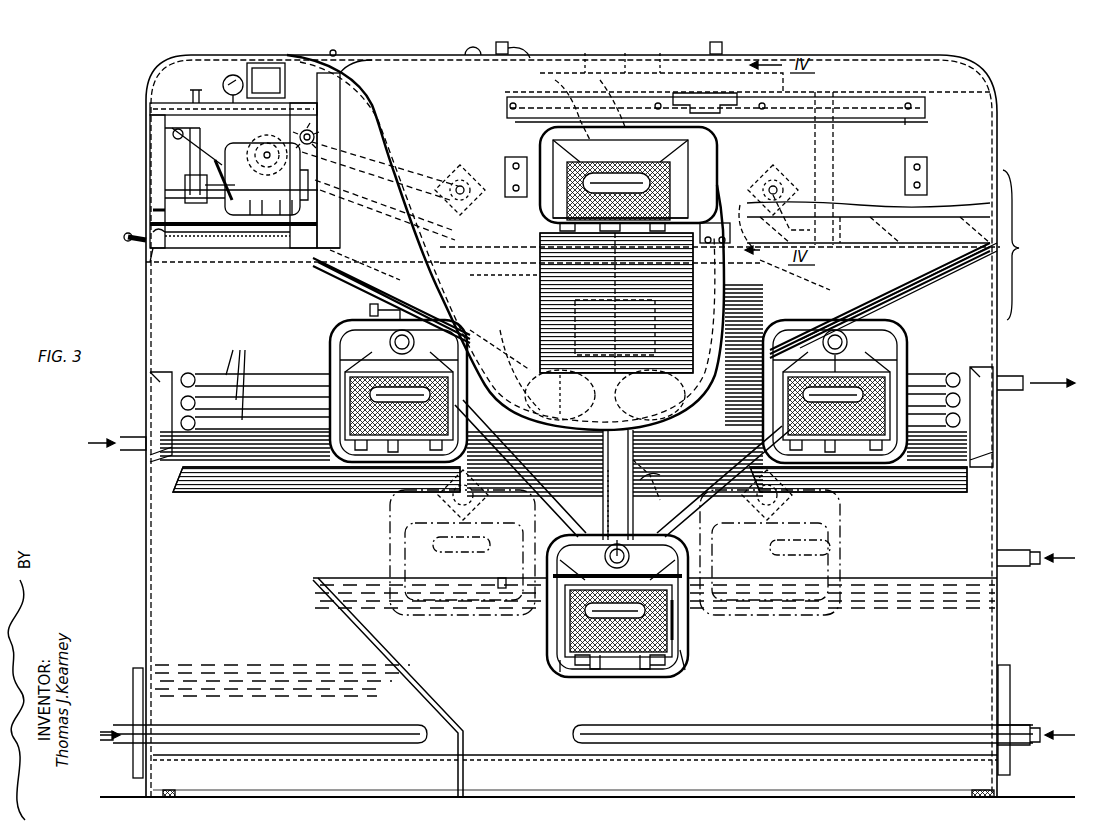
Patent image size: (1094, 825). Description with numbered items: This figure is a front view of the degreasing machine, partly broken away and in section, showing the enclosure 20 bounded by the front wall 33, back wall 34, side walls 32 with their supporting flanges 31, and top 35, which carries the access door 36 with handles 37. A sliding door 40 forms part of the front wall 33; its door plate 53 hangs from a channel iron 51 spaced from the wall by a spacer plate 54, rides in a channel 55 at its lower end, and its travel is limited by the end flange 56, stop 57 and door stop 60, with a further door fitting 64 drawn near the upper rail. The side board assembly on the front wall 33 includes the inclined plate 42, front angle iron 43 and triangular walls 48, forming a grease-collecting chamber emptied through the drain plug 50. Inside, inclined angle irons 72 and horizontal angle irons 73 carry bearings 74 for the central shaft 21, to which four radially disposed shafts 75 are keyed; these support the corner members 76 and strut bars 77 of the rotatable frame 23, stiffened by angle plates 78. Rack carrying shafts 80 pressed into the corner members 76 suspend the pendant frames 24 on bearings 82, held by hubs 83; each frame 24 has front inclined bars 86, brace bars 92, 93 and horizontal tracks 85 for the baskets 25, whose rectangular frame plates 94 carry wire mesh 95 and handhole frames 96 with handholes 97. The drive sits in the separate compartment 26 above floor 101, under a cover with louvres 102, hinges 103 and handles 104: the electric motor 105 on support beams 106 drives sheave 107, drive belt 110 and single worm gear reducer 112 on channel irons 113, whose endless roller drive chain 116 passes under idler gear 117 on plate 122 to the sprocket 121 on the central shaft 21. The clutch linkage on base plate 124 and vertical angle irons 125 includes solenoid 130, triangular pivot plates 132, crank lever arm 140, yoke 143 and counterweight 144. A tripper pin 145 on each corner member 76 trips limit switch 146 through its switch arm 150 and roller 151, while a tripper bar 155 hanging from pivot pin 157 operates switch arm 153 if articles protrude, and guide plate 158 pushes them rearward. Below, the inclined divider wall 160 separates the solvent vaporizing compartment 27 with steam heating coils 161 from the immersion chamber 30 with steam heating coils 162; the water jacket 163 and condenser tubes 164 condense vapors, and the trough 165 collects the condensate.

The enclosure 20 is at (1022, 245).
The central shaft 21 is at (535, 305).
The rotatable frame 23 is at (651, 480).
The pendant frames 24 is at (575, 683).
The baskets 25 is at (688, 655).
The separate compartment 26 is at (140, 103).
The solvent vaporizing compartment 27 is at (305, 729).
The immersion chamber 30 is at (730, 704).
The flanges 31 is at (965, 790).
The side walls 32 is at (1010, 520).
The front wall 33 is at (505, 287).
The back wall 34 is at (293, 274).
The top 35 is at (363, 69).
The access door 36 is at (466, 63).
The handles 37 is at (513, 61).
The sliding door 40 is at (540, 145).
The inclined plate 42 is at (630, 303).
The front angle iron 43 is at (720, 257).
The triangular walls 48 is at (600, 289).
The drain plug 50 is at (650, 395).
The channel iron 51 is at (872, 118).
The door plate 53 is at (779, 190).
The spacer plate 54 is at (905, 122).
The channel 55 is at (715, 245).
The end flange 56 is at (700, 175).
The stop 57 is at (503, 165).
The door stop 60 is at (927, 170).
The bracket 64 is at (720, 93).
The inclined angle irons 72 is at (880, 265).
The horizontal angle irons 73 is at (500, 367).
The bearings 74 is at (559, 395).
The radially disposed shafts 75 is at (565, 395).
The corner members 76 is at (845, 335).
The strut bars 77 is at (584, 395).
The angle plates 78 is at (561, 336).
The rack carrying shafts 80 is at (625, 545).
The bearings 82 is at (612, 505).
The hubs 83 is at (595, 570).
The horizontal tracks 85 is at (640, 670).
The front inclined bars 86 is at (562, 668).
The brace bars 92 is at (715, 565).
The brace bars 93 is at (545, 630).
The rectangular frame plates 94 is at (565, 645).
The wire mesh 95 is at (870, 430).
The handhole frames 96 is at (680, 615).
The handholes 97 is at (615, 611).
The floor 101 is at (209, 258).
The louvres 102 is at (135, 215).
The hinges 103 is at (330, 53).
The handles 104 is at (123, 249).
The electric motor 105 is at (317, 205).
The support beams 106 is at (233, 236).
The sheave 107 is at (179, 184).
The drive belt 110 is at (190, 92).
The single worm gear reducer 112 is at (266, 166).
The channel irons 113 is at (241, 206).
The endless roller drive chain 116 is at (400, 272).
The idler gear 117 is at (318, 137).
The sprocket 121 is at (523, 373).
The plate 122 is at (340, 90).
The base plate 124 is at (227, 240).
The vertical angle irons 125 is at (167, 239).
The solenoid 130 is at (266, 80).
The triangular pivot plates 132 is at (197, 141).
The crank lever arm 140 is at (182, 161).
The yoke 143 is at (229, 180).
The counterweight 144 is at (223, 84).
The tripper pin 145 is at (540, 580).
The limit switch 146 is at (674, 54).
The switch arm 150 is at (637, 54).
The roller 151 is at (599, 54).
The arm 153 is at (747, 236).
The tripper bar 155 is at (686, 162).
The pivot pin 157 is at (722, 48).
The guide plate 158 is at (875, 285).
The inclined divider wall 160 is at (435, 690).
The steam heating coils 161 is at (340, 728).
The steam heating coils 162 is at (750, 728).
The water jacket 163 is at (180, 370).
The condenser tubes 164 is at (199, 396).
The trough 165 is at (218, 492).